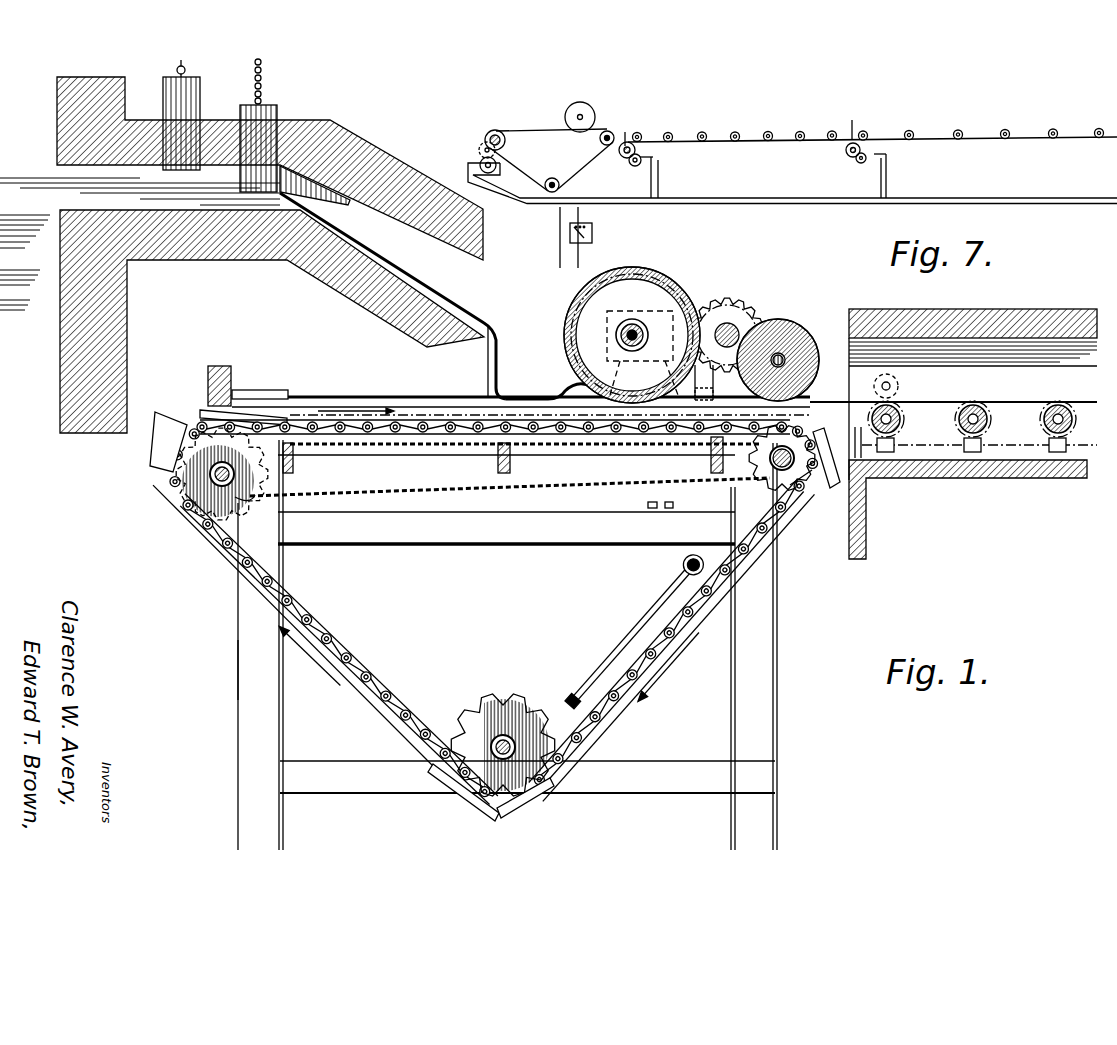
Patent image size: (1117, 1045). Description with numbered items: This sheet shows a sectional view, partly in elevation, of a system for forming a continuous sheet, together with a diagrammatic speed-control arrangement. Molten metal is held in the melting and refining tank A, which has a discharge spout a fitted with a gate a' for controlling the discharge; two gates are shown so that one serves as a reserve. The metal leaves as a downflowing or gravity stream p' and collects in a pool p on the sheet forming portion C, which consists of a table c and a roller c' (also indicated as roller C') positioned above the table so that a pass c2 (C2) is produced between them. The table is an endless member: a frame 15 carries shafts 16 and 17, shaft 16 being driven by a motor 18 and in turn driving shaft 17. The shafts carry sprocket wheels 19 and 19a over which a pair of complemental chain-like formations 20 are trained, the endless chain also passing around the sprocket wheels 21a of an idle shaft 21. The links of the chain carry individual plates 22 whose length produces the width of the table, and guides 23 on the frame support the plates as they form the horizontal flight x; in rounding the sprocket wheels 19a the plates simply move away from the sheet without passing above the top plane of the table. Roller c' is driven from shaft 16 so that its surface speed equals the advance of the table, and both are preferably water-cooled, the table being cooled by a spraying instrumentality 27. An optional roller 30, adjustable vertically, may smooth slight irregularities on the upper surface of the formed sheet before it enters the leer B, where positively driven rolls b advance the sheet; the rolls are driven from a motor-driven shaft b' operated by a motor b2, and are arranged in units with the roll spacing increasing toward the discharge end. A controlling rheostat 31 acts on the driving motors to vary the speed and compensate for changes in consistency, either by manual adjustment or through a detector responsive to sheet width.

In FIG. 1, the frame 15 is at (237, 668).
In FIG. 1, the shaft 16 is at (207, 477).
In FIG. 1, the shaft 17 is at (808, 490).
In FIG. 7, the motor 18 is at (480, 162).
In FIG. 7, the sprocket wheels 19 is at (487, 135).
In FIG. 1, the sprocket wheels 19 is at (245, 517).
In FIG. 7, the sprocket wheels 19a is at (614, 133).
In FIG. 1, the sprocket wheels 19a is at (778, 482).
In FIG. 1, the chain-like formations 20 is at (378, 678).
In FIG. 1, the idle shaft 21 is at (497, 738).
In FIG. 7, the sprocket wheels 21a is at (553, 178).
In FIG. 1, the sprocket wheels 21a is at (516, 705).
In FIG. 1, the plates 22 is at (154, 440).
In FIG. 1, the guides 23 is at (294, 462).
In FIG. 1, the spraying instrumentality 27 is at (612, 642).
In FIG. 1, the roller 30 is at (801, 334).
In FIG. 1, the controlling rheostat 31 is at (593, 233).
In FIG. 1, the melting and refining tank A is at (127, 345).
In FIG. 1, the discharge spout a is at (270, 201).
In FIG. 1, the gate a' is at (240, 125).
In FIG. 1, the leer B is at (957, 319).
In FIG. 7, the rolls b is at (868, 121).
In FIG. 1, the rolls b is at (953, 405).
In FIG. 7, the motor-driven shaft b' is at (872, 153).
In FIG. 1, the motor-driven shaft b' is at (979, 479).
In FIG. 7, the motor b2 is at (628, 166).
In FIG. 1, the sheet forming portion C is at (494, 606).
In FIG. 1, the roller C' is at (632, 323).
In FIG. 1, the pass C2 is at (637, 398).
In FIG. 7, the table c is at (551, 148).
In FIG. 7, the roller c' is at (589, 113).
In FIG. 1, the pool of metal p is at (573, 383).
In FIG. 1, the downflowing stream p' is at (407, 296).
In FIG. 1, the horizontal flight x is at (416, 400).